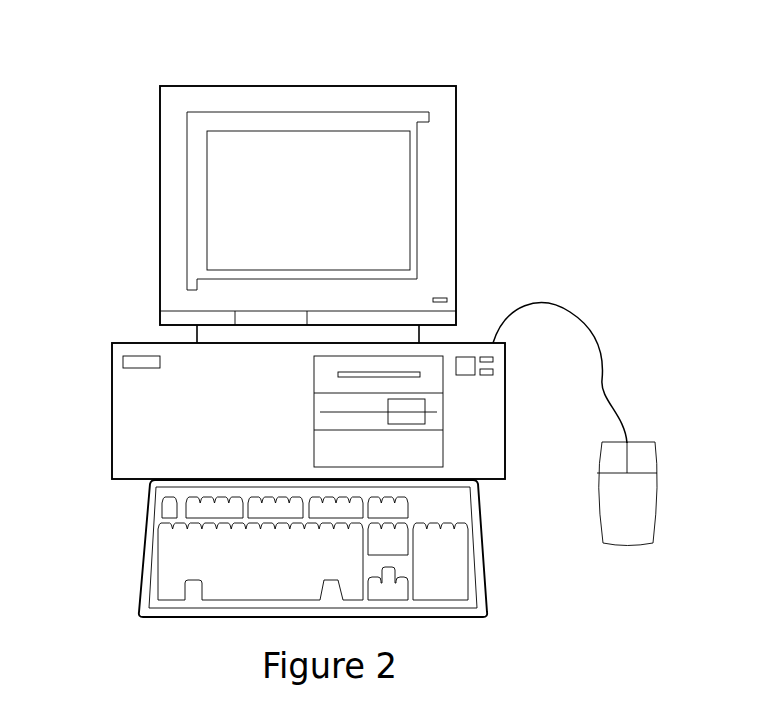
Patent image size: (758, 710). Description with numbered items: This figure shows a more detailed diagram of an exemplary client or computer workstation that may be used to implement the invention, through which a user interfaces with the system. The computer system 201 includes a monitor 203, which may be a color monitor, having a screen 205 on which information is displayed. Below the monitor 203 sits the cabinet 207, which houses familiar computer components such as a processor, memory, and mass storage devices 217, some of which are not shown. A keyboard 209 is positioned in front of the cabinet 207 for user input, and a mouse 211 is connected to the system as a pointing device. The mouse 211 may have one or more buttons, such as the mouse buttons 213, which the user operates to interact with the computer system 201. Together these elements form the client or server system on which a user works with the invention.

The computer system 201 is at (478, 60).
The monitor 203 is at (456, 177).
The screen 205 is at (223, 190).
The cabinet 207 is at (140, 348).
The keyboard 209 is at (187, 617).
The mouse 211 is at (627, 530).
The mouse buttons 213 is at (618, 462).
The mass storage devices 217 is at (434, 360).